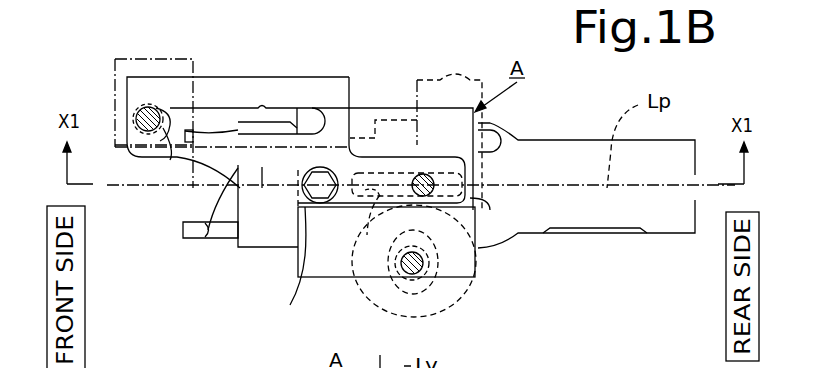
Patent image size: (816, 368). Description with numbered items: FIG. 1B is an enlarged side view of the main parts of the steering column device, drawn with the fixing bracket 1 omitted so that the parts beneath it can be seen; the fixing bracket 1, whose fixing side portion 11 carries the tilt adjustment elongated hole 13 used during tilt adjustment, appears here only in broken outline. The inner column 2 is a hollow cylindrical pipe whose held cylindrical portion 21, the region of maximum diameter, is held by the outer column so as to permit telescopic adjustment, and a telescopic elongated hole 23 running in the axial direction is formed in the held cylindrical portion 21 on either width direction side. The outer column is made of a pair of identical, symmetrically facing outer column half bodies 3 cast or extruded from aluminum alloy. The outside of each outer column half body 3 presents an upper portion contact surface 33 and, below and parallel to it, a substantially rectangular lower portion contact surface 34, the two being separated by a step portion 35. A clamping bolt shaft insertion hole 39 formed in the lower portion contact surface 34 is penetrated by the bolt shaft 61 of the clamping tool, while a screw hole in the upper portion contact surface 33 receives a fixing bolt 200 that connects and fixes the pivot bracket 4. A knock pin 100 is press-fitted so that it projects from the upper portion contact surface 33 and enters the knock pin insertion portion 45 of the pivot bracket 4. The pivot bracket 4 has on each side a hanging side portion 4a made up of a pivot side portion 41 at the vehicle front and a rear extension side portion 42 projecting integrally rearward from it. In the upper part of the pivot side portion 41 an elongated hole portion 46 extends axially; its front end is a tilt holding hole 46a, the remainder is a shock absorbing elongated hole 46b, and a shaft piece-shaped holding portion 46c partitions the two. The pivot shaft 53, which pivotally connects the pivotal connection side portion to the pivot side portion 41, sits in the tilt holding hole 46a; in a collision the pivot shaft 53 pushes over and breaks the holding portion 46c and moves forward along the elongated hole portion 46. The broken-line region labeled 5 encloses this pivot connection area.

The fixing bracket 1 is at (453, 67).
The inner column 2 is at (557, 139).
The outer column half body 3 is at (329, 280).
The pivot bracket 4 is at (334, 77).
The hanging side portion 4a is at (262, 188).
The latch unit 5 is at (126, 61).
The fixing side portion 11 is at (355, 312).
The tilt adjustment elongated hole 13 is at (477, 291).
The held cylindrical portion 21 is at (266, 248).
The telescopic elongated hole 23 is at (370, 222).
The upper portion contact surface 33 is at (468, 158).
The lower portion contact surface 34 is at (464, 227).
The step portion 35 is at (468, 202).
The clamping bolt shaft insertion hole 39 is at (418, 268).
The pivot side portion 41 is at (205, 239).
The rear extension side portion 42 is at (390, 168).
The knock pin insertion portion 45 is at (422, 174).
The elongated hole portion 46 is at (215, 113).
The tilt holding hole 46a is at (151, 106).
The shock absorbing elongated hole 46b is at (272, 115).
The holding portion 46c is at (172, 146).
The pivot shaft 53 is at (135, 117).
The bolt shaft 61 is at (418, 272).
The knock pin 100 is at (433, 175).
The fixing bolt 200 is at (290, 305).